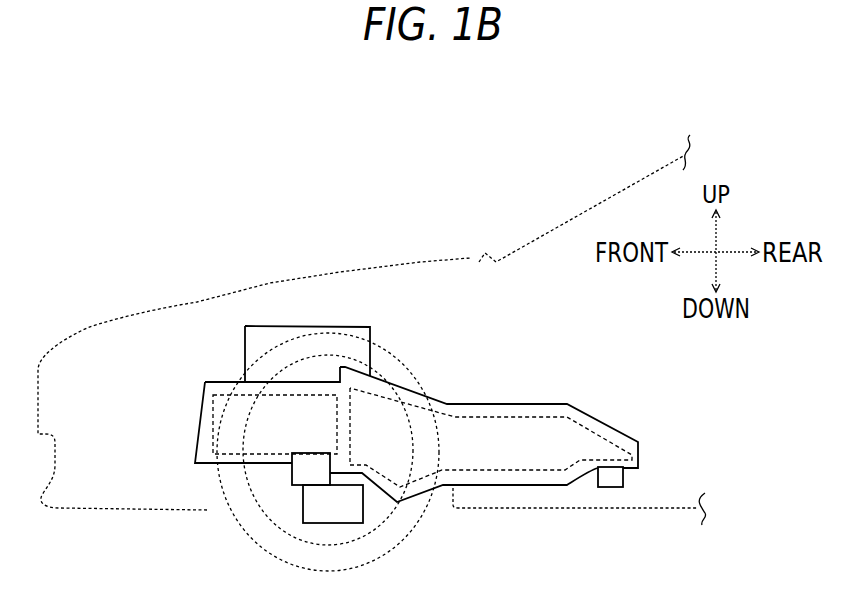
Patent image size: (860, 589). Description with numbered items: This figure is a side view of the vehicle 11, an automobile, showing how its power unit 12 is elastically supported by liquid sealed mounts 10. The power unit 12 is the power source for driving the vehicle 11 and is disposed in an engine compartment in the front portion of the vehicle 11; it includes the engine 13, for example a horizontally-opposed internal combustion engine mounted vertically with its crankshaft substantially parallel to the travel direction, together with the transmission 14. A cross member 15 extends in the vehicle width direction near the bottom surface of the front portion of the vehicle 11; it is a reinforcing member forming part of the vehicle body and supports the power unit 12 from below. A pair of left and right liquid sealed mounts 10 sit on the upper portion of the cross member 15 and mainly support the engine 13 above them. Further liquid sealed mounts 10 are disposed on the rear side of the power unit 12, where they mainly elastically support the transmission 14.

The liquid sealed mount 10 is at (295, 478).
The vehicle 11 is at (617, 192).
The power unit 12 is at (416, 377).
The engine 13 is at (449, 410).
The transmission 14 is at (449, 410).
The cross member 15 is at (363, 505).